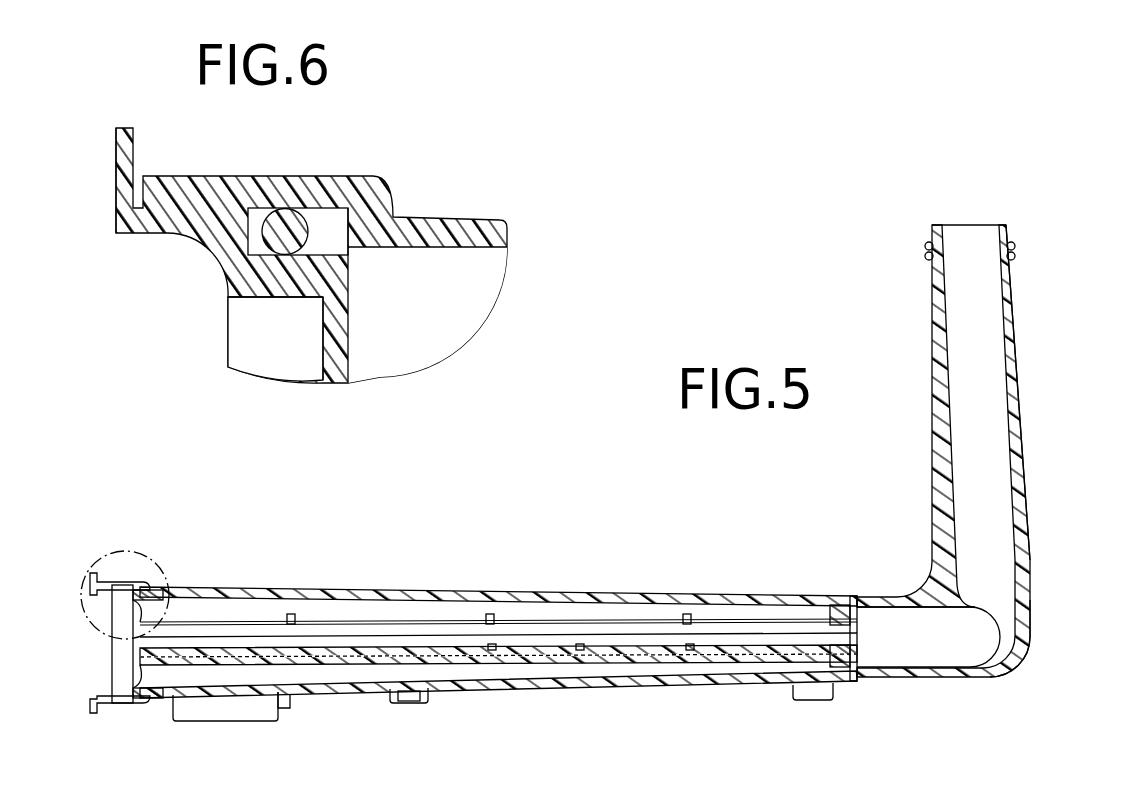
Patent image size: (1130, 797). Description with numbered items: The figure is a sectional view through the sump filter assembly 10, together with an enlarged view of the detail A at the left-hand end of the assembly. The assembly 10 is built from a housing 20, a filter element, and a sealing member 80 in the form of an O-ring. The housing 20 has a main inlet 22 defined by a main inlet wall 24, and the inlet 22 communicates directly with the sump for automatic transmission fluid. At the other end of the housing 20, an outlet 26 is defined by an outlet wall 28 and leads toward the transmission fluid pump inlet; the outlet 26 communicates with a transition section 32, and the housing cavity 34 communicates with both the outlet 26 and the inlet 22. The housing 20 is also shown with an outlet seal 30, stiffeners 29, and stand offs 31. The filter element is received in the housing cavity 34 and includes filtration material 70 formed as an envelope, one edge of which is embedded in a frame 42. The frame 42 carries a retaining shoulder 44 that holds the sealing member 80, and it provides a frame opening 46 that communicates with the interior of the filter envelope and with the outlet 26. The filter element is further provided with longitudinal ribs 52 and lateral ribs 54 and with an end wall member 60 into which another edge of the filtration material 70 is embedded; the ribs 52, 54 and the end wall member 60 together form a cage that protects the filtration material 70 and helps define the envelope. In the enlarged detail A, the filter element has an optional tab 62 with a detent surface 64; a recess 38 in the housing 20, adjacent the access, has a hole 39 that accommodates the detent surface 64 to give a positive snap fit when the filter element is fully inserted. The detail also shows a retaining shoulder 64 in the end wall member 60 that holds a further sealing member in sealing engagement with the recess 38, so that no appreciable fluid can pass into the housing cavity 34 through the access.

In FIG. 5, the sump filter assembly 10 is at (654, 555).
In FIG. 6, the housing 20 is at (473, 222).
In FIG. 5, the housing 20 is at (205, 588).
In FIG. 5, the main inlet 22 is at (260, 716).
In FIG. 5, the main inlet wall 24 is at (286, 702).
In FIG. 5, the outlet 26 is at (975, 236).
In FIG. 5, the outlet wall 28 is at (1015, 340).
In FIG. 5, the stiffeners 29 is at (1032, 600).
In FIG. 5, the outlet seal 30 is at (1016, 248).
In FIG. 5, the stand offs 31 is at (428, 700).
In FIG. 5, the transition section 32 is at (912, 657).
In FIG. 5, the housing cavity 34 is at (762, 612).
In FIG. 6, the recess 38 is at (340, 210).
In FIG. 6, the hole 39 is at (200, 182).
In FIG. 5, the frame 42 is at (857, 603).
In FIG. 5, the O-ring retaining shoulder 44 is at (856, 680).
In FIG. 5, the frame opening 46 is at (850, 638).
In FIG. 5, the longitudinal ribs 52 is at (735, 662).
In FIG. 5, the lateral ribs 54 is at (490, 614).
In FIG. 6, the end wall member 60 is at (330, 367).
In FIG. 5, the end wall member 60 is at (112, 675).
In FIG. 6, the tab 62 is at (153, 227).
In FIG. 6, the detent surface 64 is at (187, 180).
In FIG. 5, the filtration material 70 is at (290, 614).
In FIG. 5, the sealing member 80 is at (838, 605).
In FIG. 5, the detail A is at (96, 565).